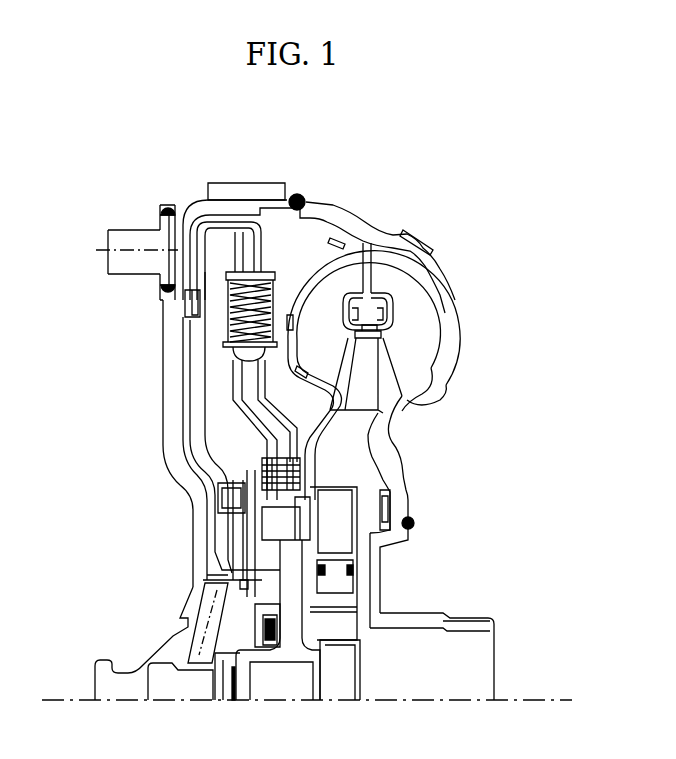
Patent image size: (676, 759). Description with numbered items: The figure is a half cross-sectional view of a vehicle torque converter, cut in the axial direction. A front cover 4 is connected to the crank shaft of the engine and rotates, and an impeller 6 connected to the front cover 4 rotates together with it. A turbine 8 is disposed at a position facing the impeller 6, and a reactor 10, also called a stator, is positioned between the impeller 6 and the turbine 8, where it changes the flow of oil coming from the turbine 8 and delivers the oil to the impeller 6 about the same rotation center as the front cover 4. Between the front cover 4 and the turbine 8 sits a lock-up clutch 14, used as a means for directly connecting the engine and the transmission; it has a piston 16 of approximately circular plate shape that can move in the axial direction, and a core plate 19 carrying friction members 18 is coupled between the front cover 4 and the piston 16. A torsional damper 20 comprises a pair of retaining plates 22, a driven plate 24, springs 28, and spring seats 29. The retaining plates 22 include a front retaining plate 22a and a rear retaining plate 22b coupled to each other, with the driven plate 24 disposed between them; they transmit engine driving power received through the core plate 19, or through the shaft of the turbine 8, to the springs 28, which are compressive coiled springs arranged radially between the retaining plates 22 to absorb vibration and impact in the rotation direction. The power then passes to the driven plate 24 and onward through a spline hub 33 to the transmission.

The front cover 4 is at (202, 540).
The impeller 6 is at (417, 363).
The turbine 8 is at (342, 263).
The reactor 10 is at (363, 392).
The lock-up clutch 14 is at (184, 316).
The piston 16 is at (197, 375).
The friction members 18 is at (190, 300).
The core plate 19 is at (200, 222).
The torsional damper 20 is at (267, 219).
The retaining plates 22 is at (393, 140).
The front retaining plate 22a is at (243, 245).
The rear retaining plate 22b is at (257, 257).
The driven plate 24 is at (385, 460).
The springs 28 is at (272, 300).
The spring seats 29 is at (262, 352).
The spline hub 33 is at (253, 557).